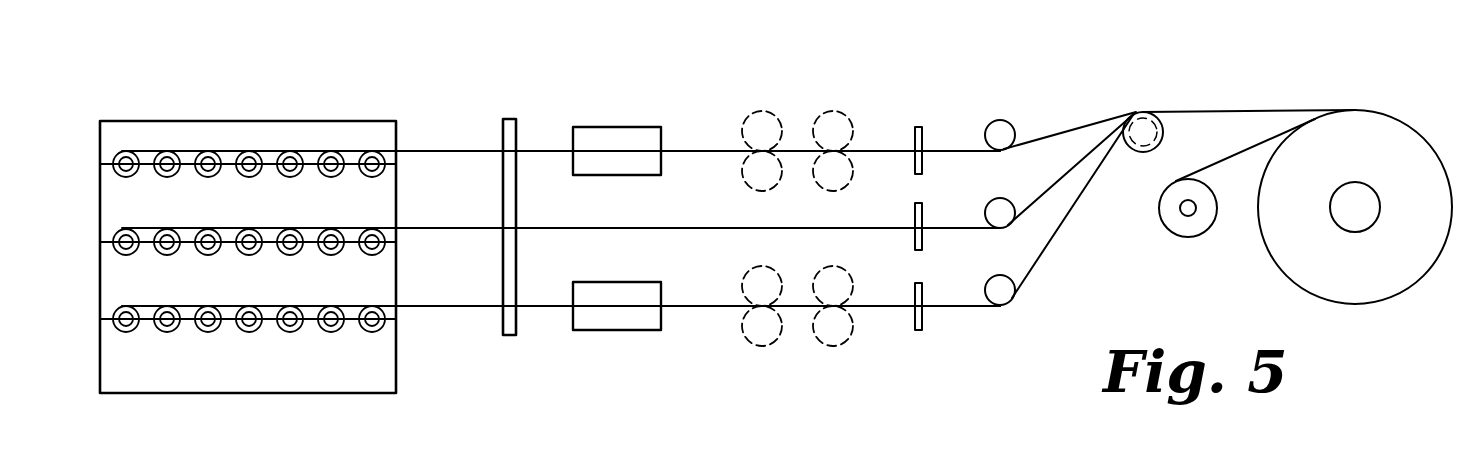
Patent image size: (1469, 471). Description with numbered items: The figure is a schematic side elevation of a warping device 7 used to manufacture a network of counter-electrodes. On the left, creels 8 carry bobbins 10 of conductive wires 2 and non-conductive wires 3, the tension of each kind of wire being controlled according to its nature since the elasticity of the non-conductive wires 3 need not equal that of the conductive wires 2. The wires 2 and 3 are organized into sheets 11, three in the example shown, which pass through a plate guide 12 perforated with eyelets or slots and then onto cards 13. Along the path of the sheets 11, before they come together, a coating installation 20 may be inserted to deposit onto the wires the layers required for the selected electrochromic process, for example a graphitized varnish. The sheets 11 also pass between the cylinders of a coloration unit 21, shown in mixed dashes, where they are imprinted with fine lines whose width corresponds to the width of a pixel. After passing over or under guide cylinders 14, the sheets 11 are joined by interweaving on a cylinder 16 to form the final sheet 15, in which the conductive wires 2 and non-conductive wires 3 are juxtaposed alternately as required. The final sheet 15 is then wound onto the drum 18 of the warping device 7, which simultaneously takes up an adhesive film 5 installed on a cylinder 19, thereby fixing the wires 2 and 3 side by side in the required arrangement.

The conductive wires 2 is at (192, 150).
The non-conductive wires 3 is at (232, 227).
The adhesive film 5 is at (1205, 165).
The warping device 7 is at (607, 361).
The creels 8 is at (234, 124).
The bobbins 10 is at (166, 157).
The sheets 11 is at (422, 150).
The plate guide 12 is at (518, 124).
The cards 13 is at (924, 128).
The guide cylinders 14 is at (1010, 120).
The final sheet 15 is at (1275, 110).
The cylinder 16 is at (1148, 112).
The drum 18 is at (1367, 118).
The cylinder 19 is at (1187, 237).
The coating installation 20 is at (610, 128).
The coloration unit 21 is at (828, 112).